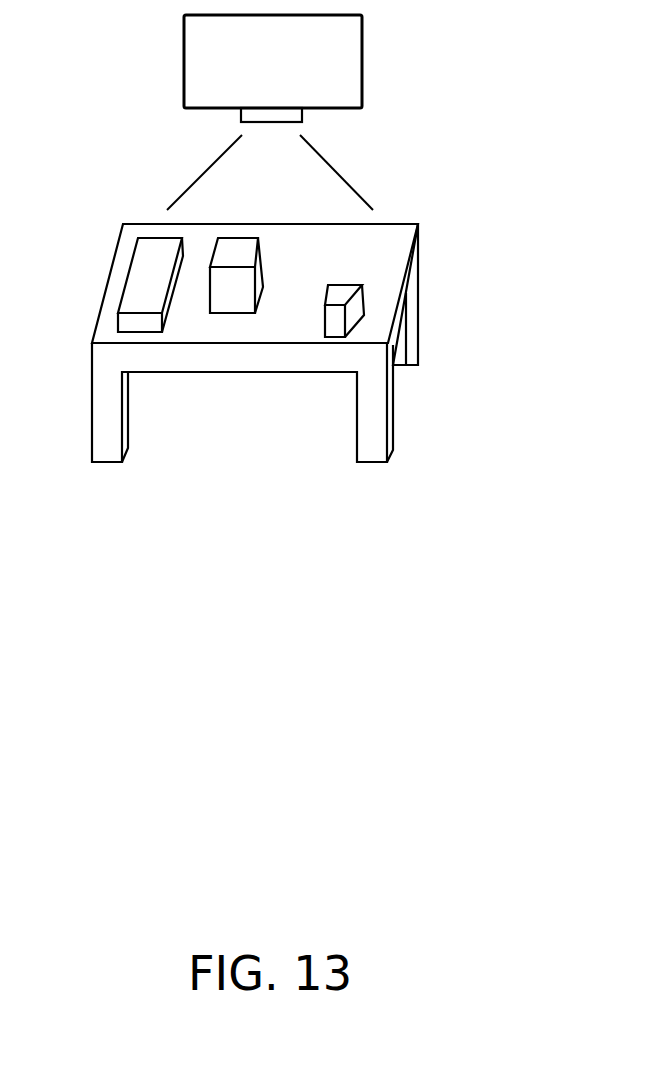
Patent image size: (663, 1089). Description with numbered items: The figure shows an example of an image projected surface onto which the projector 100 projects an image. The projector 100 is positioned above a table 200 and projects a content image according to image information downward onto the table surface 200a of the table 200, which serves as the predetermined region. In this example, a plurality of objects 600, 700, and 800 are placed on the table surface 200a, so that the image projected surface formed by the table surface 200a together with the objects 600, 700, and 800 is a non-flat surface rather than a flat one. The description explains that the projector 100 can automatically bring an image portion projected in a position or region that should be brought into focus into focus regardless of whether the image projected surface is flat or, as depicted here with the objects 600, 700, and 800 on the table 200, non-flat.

The projector 100 is at (362, 43).
The table 200 is at (291, 329).
The table surface 200a is at (382, 237).
The object 600 is at (133, 267).
The object 700 is at (235, 247).
The object 800 is at (342, 288).